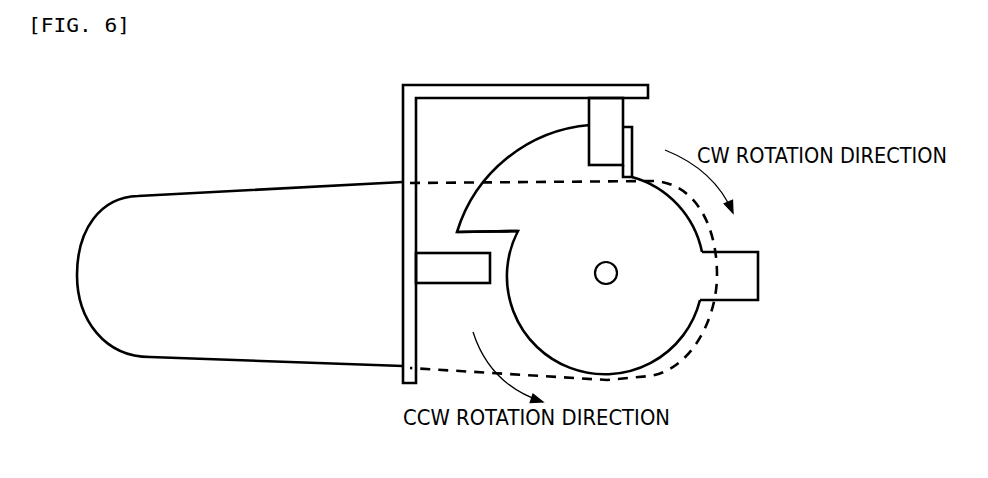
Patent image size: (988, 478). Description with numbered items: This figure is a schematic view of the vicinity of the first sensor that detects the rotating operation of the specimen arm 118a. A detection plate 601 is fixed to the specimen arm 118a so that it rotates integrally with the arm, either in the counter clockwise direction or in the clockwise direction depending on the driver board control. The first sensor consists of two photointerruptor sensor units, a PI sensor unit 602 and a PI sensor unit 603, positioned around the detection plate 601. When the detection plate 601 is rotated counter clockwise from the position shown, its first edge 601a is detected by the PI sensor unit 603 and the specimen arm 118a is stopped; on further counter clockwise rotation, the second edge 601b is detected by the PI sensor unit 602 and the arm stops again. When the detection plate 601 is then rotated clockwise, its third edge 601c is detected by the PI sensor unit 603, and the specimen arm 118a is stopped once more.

The specimen arm 118a is at (213, 193).
The detection plate 601 is at (676, 346).
The first edge 601a is at (490, 232).
The second edge 601b is at (735, 252).
The third edge 601c is at (632, 152).
The PI sensor unit 602 is at (589, 118).
The PI sensor unit 603 is at (440, 252).